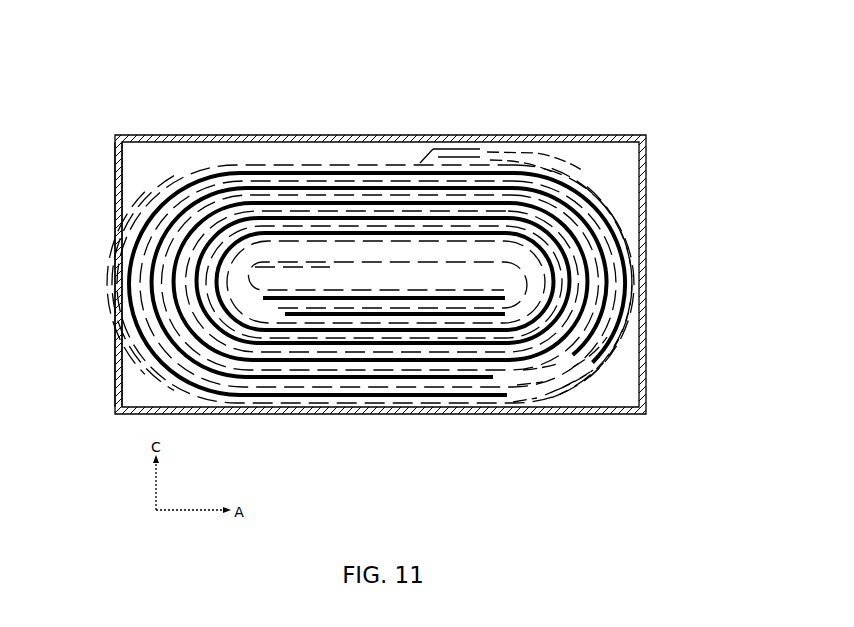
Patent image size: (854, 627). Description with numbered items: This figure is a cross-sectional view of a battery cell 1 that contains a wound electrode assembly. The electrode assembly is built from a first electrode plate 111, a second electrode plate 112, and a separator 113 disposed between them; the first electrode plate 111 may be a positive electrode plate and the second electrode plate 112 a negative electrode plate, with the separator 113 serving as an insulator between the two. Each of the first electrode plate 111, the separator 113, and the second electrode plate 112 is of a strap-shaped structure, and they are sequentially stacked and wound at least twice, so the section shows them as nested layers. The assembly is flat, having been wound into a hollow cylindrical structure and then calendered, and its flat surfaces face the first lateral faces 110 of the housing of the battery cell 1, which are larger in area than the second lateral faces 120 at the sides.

The battery cell 1 is at (238, 88).
The first lateral face 110 is at (387, 135).
The first electrode plate 111 is at (592, 245).
The second electrode plate 112 is at (600, 328).
The separator 113 is at (600, 247).
The second lateral face 120 is at (116, 204).